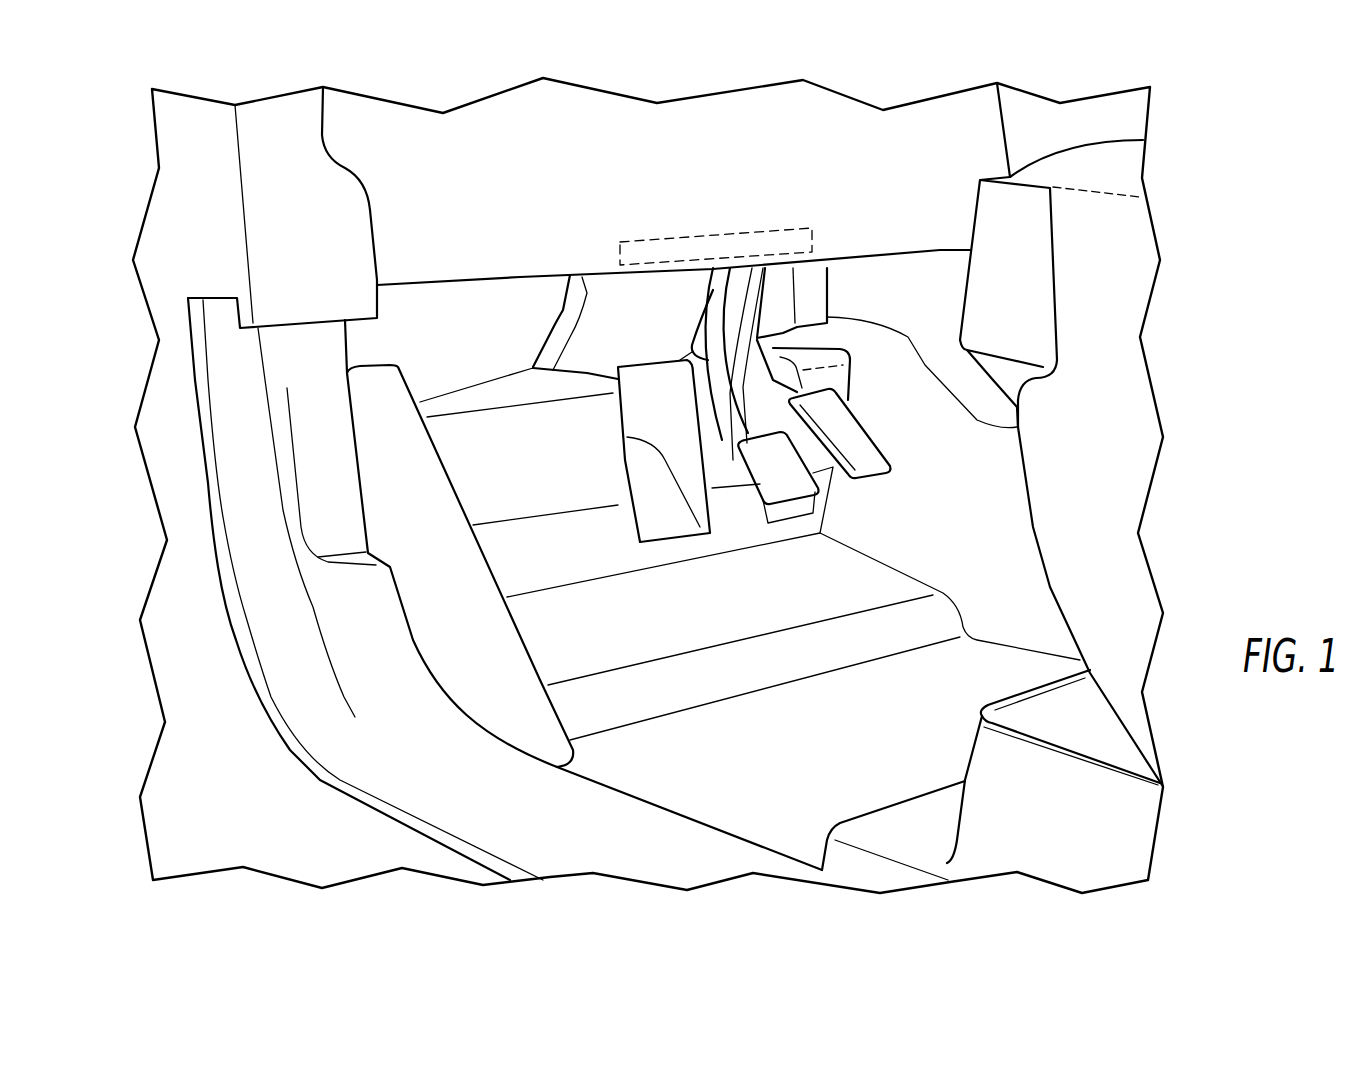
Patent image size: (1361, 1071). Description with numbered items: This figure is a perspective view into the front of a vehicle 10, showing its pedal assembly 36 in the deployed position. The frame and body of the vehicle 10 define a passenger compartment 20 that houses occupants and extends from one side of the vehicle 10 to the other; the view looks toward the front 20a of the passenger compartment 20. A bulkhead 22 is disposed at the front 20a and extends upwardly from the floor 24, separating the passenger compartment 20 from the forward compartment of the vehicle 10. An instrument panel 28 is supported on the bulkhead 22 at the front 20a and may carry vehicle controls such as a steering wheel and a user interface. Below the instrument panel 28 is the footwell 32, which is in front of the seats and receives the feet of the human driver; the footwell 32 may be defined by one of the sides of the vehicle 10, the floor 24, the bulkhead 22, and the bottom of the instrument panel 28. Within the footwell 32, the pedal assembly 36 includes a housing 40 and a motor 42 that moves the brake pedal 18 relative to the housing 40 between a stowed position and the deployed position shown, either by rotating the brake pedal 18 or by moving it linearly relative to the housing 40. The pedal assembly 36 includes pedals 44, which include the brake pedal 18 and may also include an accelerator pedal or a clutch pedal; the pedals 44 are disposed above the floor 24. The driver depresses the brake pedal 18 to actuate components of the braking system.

The vehicle 10 is at (1213, 160).
The brake pedal 18 is at (797, 487).
The passenger compartment 20 is at (723, 797).
The front 20a is at (683, 777).
The bulkhead 22 is at (437, 316).
The floor 24 is at (611, 712).
The instrument panel 28 is at (590, 157).
The footwell 32 is at (680, 600).
The pedal assembly 36 is at (863, 343).
The housing 40 is at (620, 462).
The motor 42 is at (770, 230).
The pedals 44 is at (870, 457).